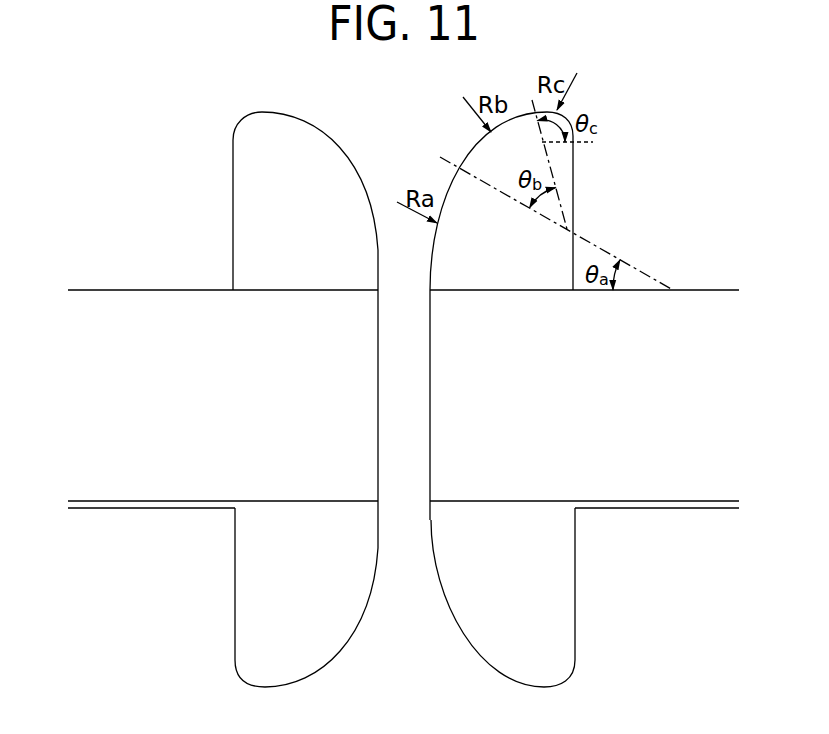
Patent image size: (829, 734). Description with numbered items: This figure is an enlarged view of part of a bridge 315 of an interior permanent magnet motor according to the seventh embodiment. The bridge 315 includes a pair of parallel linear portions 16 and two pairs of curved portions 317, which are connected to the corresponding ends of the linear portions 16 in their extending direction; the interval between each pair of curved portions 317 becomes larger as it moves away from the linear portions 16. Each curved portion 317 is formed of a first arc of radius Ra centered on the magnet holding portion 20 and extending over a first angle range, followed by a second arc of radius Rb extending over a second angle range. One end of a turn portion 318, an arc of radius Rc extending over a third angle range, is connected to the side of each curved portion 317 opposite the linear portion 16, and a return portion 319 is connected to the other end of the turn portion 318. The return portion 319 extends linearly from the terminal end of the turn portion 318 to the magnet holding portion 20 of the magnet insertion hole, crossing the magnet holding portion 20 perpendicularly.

The magnet holding portion 20 is at (702, 288).
The bridge 315 is at (416, 380).
The curved portion 317 is at (377, 250).
The turn portion 318 is at (242, 122).
The return portion 319 is at (233, 225).
The linear portion 16 is at (378, 463).